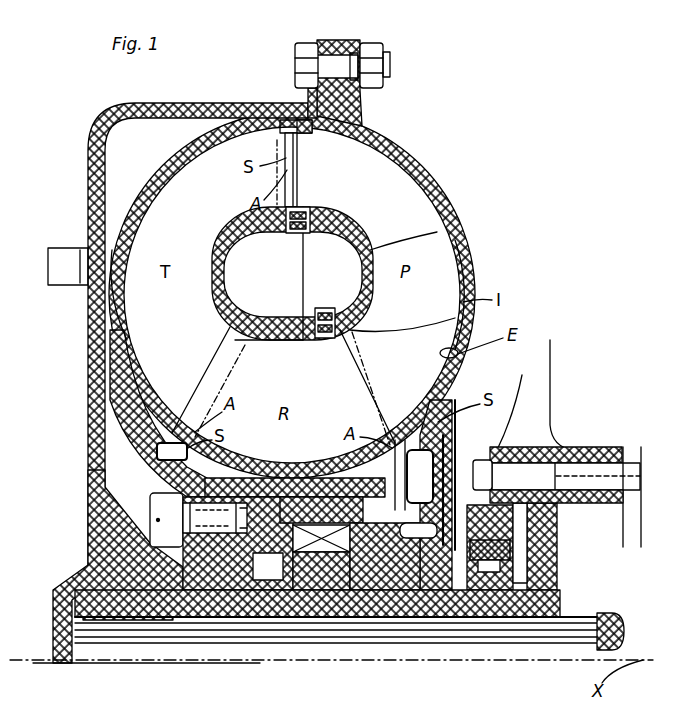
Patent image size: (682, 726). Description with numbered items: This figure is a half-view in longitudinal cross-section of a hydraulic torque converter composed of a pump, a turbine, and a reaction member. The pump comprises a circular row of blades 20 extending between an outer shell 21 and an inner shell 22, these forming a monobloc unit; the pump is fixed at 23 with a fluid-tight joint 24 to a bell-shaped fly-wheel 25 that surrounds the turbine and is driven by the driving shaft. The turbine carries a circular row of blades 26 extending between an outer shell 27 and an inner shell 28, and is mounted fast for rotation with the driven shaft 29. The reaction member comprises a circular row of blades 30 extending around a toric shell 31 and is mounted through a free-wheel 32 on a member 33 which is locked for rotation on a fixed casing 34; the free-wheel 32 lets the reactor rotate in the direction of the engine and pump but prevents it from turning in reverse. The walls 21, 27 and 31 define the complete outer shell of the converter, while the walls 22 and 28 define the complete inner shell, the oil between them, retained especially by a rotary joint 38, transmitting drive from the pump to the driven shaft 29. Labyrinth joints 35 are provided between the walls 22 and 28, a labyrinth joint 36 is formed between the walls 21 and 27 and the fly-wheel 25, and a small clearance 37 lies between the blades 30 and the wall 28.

The blades 20 is at (393, 196).
The outer shell 21 is at (462, 266).
The inner shell 22 is at (380, 252).
The fixing 23 is at (390, 64).
The fluid-tight joint 24 is at (318, 122).
The fly-wheel 25 is at (126, 127).
The blades 26 is at (153, 383).
The outer shell 27 is at (126, 376).
The inner shell 28 is at (213, 300).
The driven shaft 29 is at (597, 616).
The blades 30 is at (420, 394).
The toric shell 31 is at (299, 474).
The free-wheel 32 is at (323, 548).
The member 33 is at (413, 606).
The fixed casing 34 is at (570, 461).
The labyrinth joints 35 is at (302, 212).
The labyrinth joint 36 is at (295, 128).
The clearance 37 is at (269, 348).
The rotary joint 38 is at (500, 562).